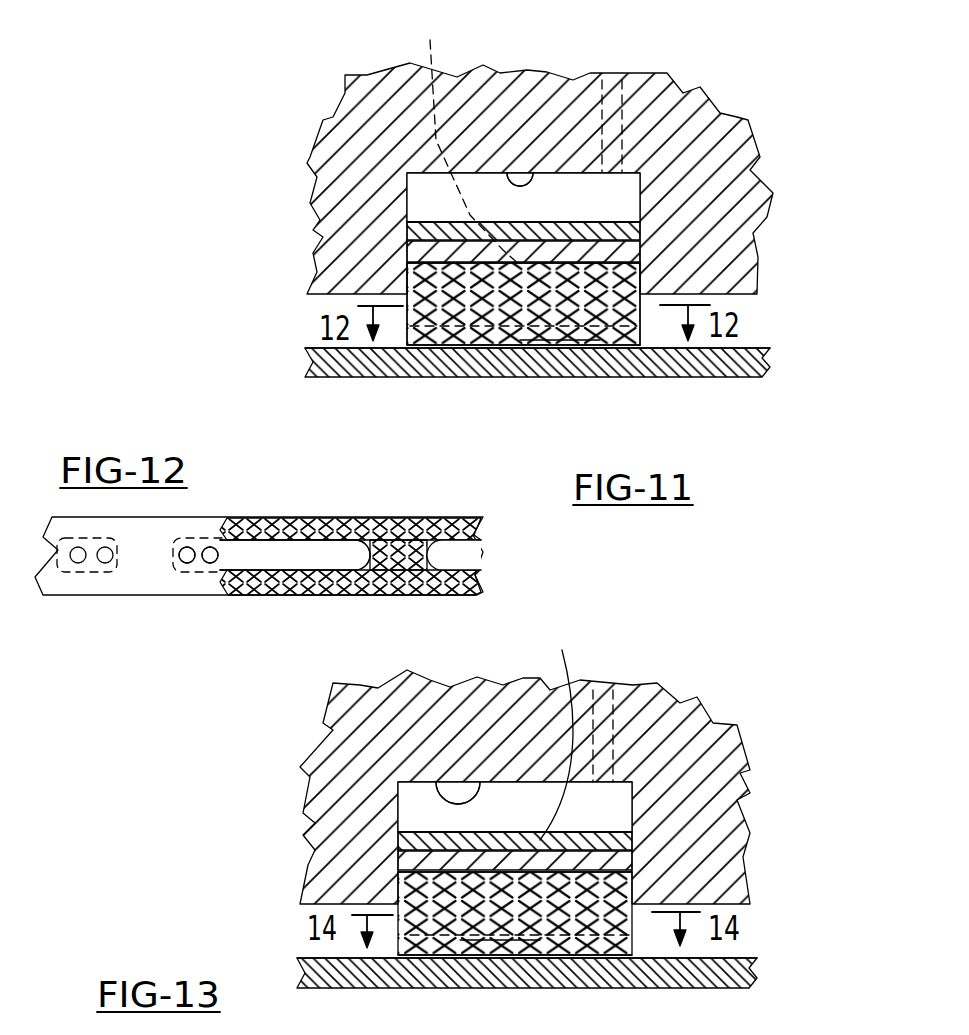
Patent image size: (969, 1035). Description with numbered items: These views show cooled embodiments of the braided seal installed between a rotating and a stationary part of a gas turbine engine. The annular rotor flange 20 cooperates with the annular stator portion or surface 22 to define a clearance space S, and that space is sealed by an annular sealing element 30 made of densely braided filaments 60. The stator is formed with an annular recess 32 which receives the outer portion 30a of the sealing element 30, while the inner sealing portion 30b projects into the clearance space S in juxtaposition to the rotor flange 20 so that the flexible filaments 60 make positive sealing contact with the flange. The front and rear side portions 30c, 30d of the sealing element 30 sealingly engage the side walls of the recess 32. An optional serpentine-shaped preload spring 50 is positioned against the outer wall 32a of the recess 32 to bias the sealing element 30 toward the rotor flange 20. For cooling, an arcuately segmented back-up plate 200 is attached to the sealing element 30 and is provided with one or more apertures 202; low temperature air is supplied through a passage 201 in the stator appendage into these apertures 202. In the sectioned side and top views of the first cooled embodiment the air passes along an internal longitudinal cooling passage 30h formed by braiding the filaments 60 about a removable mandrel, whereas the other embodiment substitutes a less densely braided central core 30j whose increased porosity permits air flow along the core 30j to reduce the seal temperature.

In FIG. 11, the annular rotor flange 20 is at (710, 358).
In FIG. 13, the annular rotor flange 20 is at (610, 970).
In FIG. 11, the annular stator portion 22 is at (752, 296).
In FIG. 13, the annular stator portion 22 is at (750, 913).
In FIG. 11, the sealing element 30 is at (523, 304).
In FIG. 12, the sealing element 30 is at (475, 570).
In FIG. 13, the sealing element 30 is at (515, 913).
In FIG. 11, the outer portion 30a is at (600, 273).
In FIG. 13, the outer portion 30a is at (615, 782).
In FIG. 11, the inner sealing portion 30b is at (460, 333).
In FIG. 13, the inner sealing portion 30b is at (463, 943).
In FIG. 11, the front side portion 30c is at (407, 333).
In FIG. 11, the rear side portion 30d is at (642, 325).
In FIG. 11, the internal longitudinal cooling passage 30h is at (513, 330).
In FIG. 12, the internal longitudinal cooling passage 30h is at (280, 555).
In FIG. 13, the less densely braided central core 30j is at (525, 925).
In FIG. 11, the annular recess 32 is at (615, 190).
In FIG. 13, the annular recess 32 is at (605, 797).
In FIG. 11, the outer wall of the recess 32a is at (540, 170).
In FIG. 13, the outer wall of the recess 32a is at (483, 792).
In FIG. 11, the serpentine-shaped spring 50 is at (432, 220).
In FIG. 13, the serpentine-shaped spring 50 is at (437, 833).
In FIG. 11, the braided filaments 60 is at (568, 330).
In FIG. 13, the braided filaments 60 is at (497, 940).
In FIG. 11, the arcuately segmented back-up plate 200 is at (413, 253).
In FIG. 13, the arcuately segmented back-up plate 200 is at (400, 862).
In FIG. 11, the passage 201 is at (625, 128).
In FIG. 13, the passage 201 is at (622, 765).
In FIG. 11, the apertures 202 is at (461, 138).
In FIG. 12, the apertures 202 is at (212, 566).
In FIG. 13, the apertures 202 is at (565, 730).
In FIG. 11, the clearance space S is at (760, 328).
In FIG. 13, the clearance space S is at (747, 937).